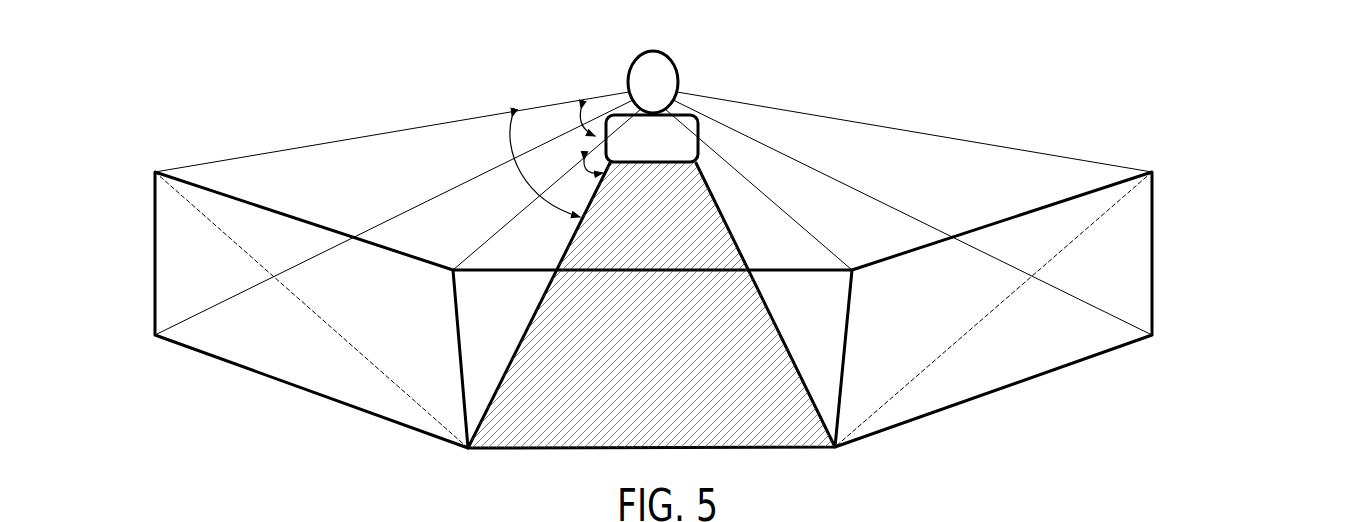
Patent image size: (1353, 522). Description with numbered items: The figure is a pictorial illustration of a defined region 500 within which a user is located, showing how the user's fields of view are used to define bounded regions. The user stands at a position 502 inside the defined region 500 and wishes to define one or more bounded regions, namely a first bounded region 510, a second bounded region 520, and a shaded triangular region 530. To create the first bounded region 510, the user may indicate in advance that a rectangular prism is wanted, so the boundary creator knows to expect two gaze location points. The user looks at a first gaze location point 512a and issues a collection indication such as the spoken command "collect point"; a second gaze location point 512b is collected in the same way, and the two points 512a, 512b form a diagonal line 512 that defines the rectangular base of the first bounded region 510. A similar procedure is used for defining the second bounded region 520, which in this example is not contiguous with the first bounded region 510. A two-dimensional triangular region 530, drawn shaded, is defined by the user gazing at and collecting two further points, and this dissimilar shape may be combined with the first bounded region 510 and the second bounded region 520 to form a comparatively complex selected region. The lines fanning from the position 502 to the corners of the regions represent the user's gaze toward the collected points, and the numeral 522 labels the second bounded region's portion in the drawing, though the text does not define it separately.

The defined region 500 is at (1210, 55).
The position 502 is at (673, 73).
The first bounded region 510 is at (372, 135).
The diagonal line 512 is at (312, 308).
The first gaze location point 512a is at (155, 172).
The second gaze location point 512b is at (1152, 172).
The second bounded region 520 is at (973, 143).
The second side portion of defined region 522 is at (990, 308).
The triangular region 530 is at (542, 300).